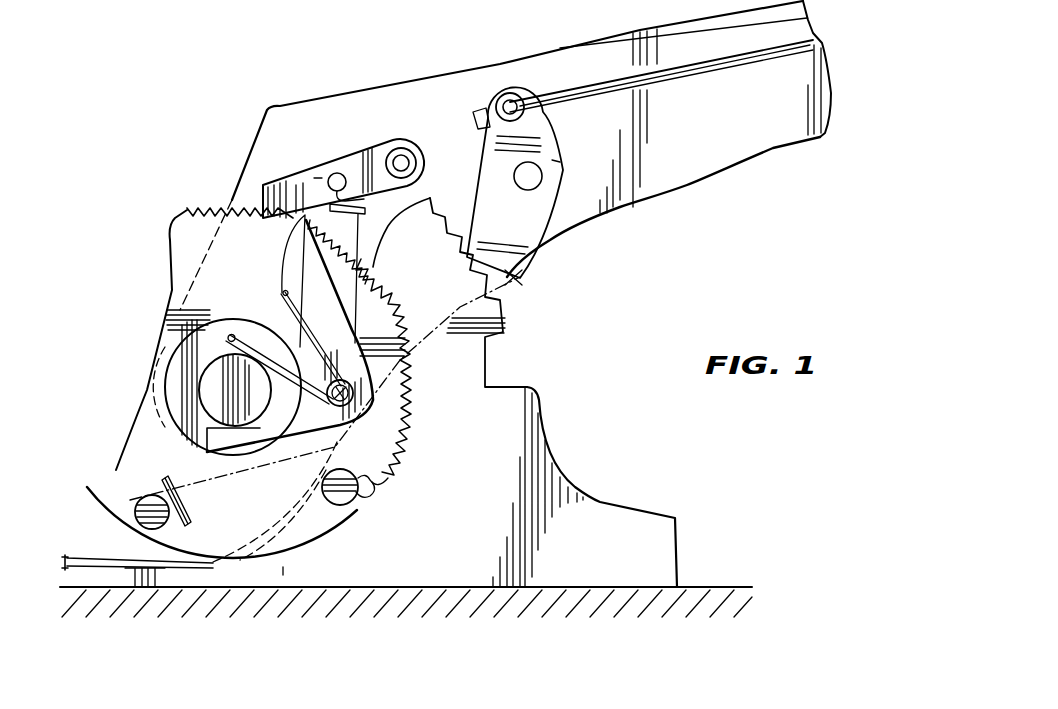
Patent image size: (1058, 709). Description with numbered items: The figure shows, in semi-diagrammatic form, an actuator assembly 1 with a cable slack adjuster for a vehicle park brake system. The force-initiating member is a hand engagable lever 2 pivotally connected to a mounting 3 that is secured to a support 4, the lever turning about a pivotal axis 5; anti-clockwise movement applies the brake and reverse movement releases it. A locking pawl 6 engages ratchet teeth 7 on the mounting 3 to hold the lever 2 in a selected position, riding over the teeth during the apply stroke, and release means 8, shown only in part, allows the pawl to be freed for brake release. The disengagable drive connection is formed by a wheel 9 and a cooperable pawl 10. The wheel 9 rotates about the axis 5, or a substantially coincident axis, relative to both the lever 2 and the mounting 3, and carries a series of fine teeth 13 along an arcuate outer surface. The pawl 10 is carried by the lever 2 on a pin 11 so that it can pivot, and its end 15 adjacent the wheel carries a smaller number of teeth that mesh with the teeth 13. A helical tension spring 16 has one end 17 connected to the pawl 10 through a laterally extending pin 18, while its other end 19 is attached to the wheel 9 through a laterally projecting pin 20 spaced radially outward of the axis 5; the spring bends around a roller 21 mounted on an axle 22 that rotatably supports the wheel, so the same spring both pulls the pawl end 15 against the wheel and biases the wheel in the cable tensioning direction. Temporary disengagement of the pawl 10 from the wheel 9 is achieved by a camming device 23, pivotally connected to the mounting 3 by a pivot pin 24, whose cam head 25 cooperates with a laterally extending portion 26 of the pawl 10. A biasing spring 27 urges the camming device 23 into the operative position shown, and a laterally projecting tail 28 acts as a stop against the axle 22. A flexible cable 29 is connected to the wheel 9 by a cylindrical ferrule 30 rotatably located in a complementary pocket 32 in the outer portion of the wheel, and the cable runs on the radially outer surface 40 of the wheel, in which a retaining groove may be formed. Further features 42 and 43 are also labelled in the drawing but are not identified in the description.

The actuator assembly 1 is at (583, 362).
The hand engagable lever 2 is at (604, 56).
The mounting 3 is at (540, 471).
The support 4 is at (718, 586).
The pivotal axis 5 is at (210, 370).
The locking pawl 6 is at (517, 281).
The ratchet teeth 7 is at (467, 222).
The release means 8 is at (657, 79).
The wheel 9 is at (388, 429).
The pawl 10 is at (386, 147).
The pin 11 is at (404, 150).
The teeth 13 is at (187, 210).
The pawl end 15 is at (270, 200).
The helical tension spring 16 is at (188, 528).
The spring end 17 is at (360, 206).
The pin 18 is at (337, 172).
The spring end 19 is at (187, 506).
The pin 20 is at (122, 480).
The roller 21 is at (177, 300).
The axle 22 is at (210, 400).
The camming device 23 is at (345, 297).
The pivot pin 24 is at (412, 408).
The cam head 25 is at (302, 220).
The laterally extending portion 26 is at (318, 177).
The biasing spring 27 is at (283, 300).
The tail 28 is at (207, 442).
The flexible cable 29 is at (133, 588).
The cylindrical ferrule 30 is at (342, 506).
The pocket 32 is at (372, 496).
The radially outer surface 40 is at (283, 568).
The wall section 42 is at (310, 185).
The sector teeth 43 is at (371, 256).